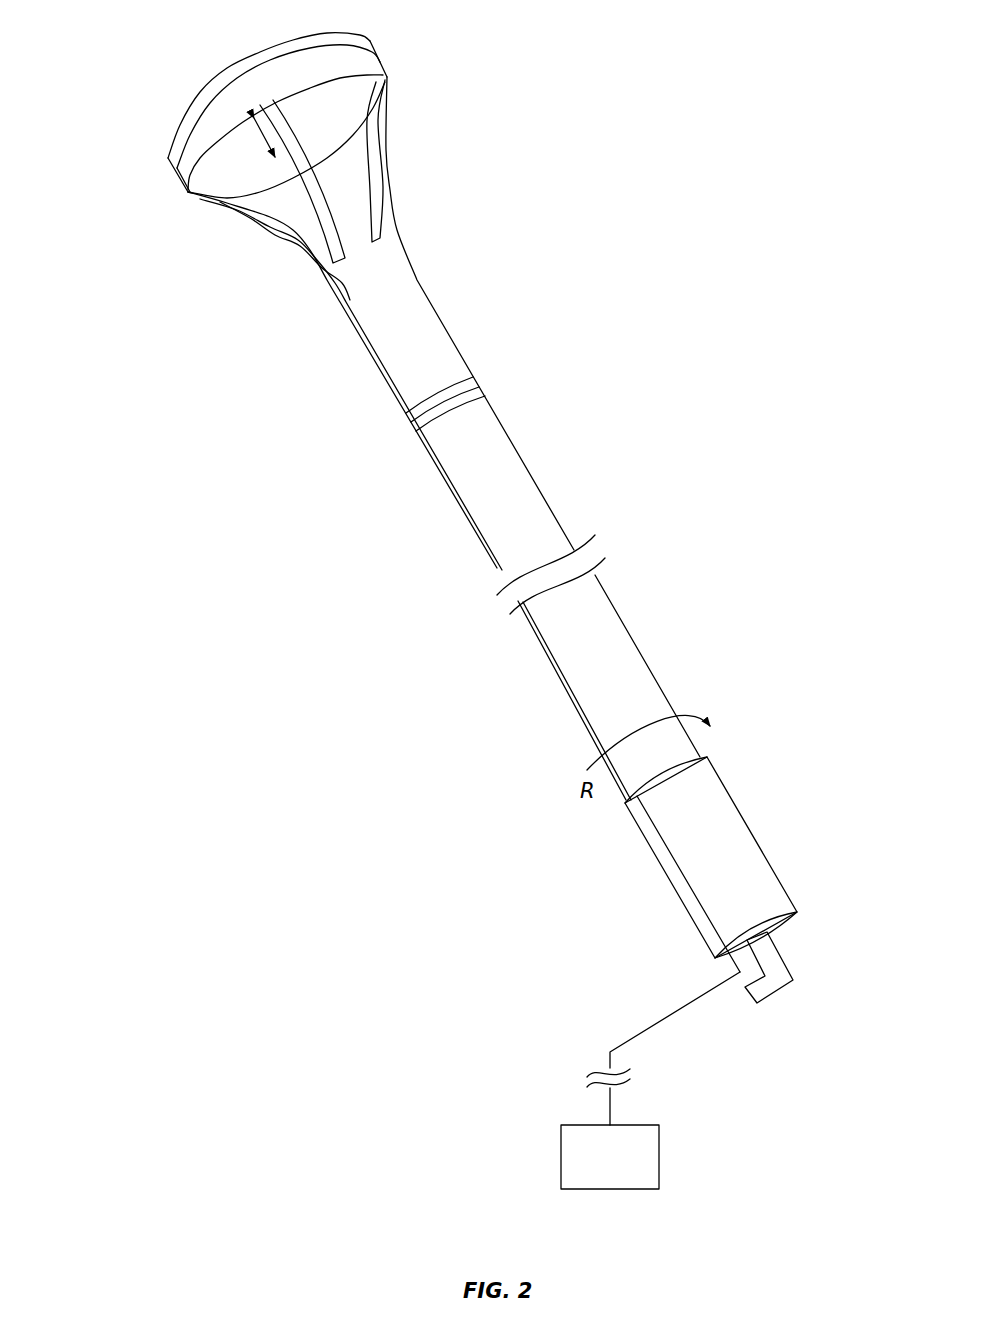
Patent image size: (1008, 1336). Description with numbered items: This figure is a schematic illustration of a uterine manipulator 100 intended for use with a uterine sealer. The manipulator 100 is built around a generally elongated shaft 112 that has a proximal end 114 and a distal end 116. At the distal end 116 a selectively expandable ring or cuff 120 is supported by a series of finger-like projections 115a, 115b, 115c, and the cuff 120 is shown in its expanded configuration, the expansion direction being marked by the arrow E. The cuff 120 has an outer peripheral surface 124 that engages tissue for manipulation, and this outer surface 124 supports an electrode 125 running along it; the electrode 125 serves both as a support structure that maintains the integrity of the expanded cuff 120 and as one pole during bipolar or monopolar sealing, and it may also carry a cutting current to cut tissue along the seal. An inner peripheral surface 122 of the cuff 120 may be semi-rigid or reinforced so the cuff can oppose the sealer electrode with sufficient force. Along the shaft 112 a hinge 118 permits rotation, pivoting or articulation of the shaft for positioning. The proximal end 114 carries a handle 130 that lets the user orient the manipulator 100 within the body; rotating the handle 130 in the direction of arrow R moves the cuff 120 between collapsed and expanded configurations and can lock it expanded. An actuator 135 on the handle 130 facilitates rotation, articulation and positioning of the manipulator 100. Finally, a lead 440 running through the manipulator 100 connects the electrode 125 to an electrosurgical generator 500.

The uterine manipulator 100 is at (510, 76).
The expandable ring or cuff 120 is at (274, 104).
The outer peripheral surface 124 is at (267, 62).
The electrode 125 is at (350, 48).
The inner peripheral surface 122 is at (388, 75).
The elongated shaft 112 is at (381, 323).
The finger-like projection 115a is at (380, 187).
The finger-like projection 115b is at (372, 155).
The finger-like projection 115c is at (290, 243).
The distal end 116 is at (358, 288).
The hinge 118 is at (470, 380).
The proximal end 114 is at (635, 670).
The handle 130 is at (732, 822).
The actuator 135 is at (782, 983).
The lead 440 is at (647, 1028).
The electrosurgical generator 500 is at (660, 1157).